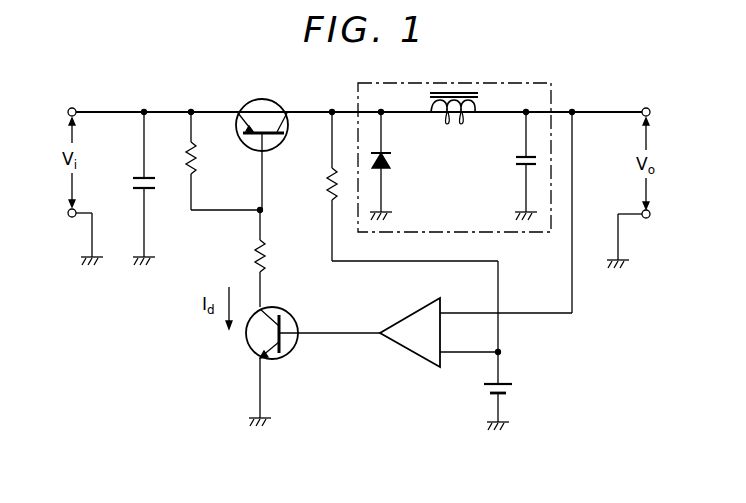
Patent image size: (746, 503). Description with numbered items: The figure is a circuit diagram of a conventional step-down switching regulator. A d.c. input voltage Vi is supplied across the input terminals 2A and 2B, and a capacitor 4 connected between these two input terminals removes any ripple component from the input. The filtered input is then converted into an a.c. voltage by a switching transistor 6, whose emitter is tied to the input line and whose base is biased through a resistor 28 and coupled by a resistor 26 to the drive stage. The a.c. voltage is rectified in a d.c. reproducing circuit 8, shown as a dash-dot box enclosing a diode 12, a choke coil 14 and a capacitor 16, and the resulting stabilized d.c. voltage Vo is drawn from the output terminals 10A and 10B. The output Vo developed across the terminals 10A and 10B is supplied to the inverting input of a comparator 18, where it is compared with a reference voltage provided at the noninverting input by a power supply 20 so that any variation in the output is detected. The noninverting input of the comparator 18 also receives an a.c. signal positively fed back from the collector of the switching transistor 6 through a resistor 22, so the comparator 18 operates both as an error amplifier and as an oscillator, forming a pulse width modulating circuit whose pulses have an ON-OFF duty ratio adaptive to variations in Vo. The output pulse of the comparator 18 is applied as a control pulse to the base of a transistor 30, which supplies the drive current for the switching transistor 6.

The input terminal 2A is at (68, 113).
The input terminal 2B is at (69, 216).
The capacitor 4 is at (155, 184).
The switching transistor 6 is at (271, 99).
The d.c. reproducing circuit 8 is at (524, 234).
The output terminal 10A is at (650, 112).
The output terminal 10B is at (650, 216).
The diode 12 is at (391, 158).
The choke coil 14 is at (455, 118).
The capacitor 16 is at (515, 164).
The comparator 18 is at (411, 353).
The power supply 20 is at (513, 389).
The resistor 22 is at (326, 179).
The base resistor 26 is at (266, 258).
The bias resistor 28 is at (196, 158).
The transistor 30 is at (288, 358).